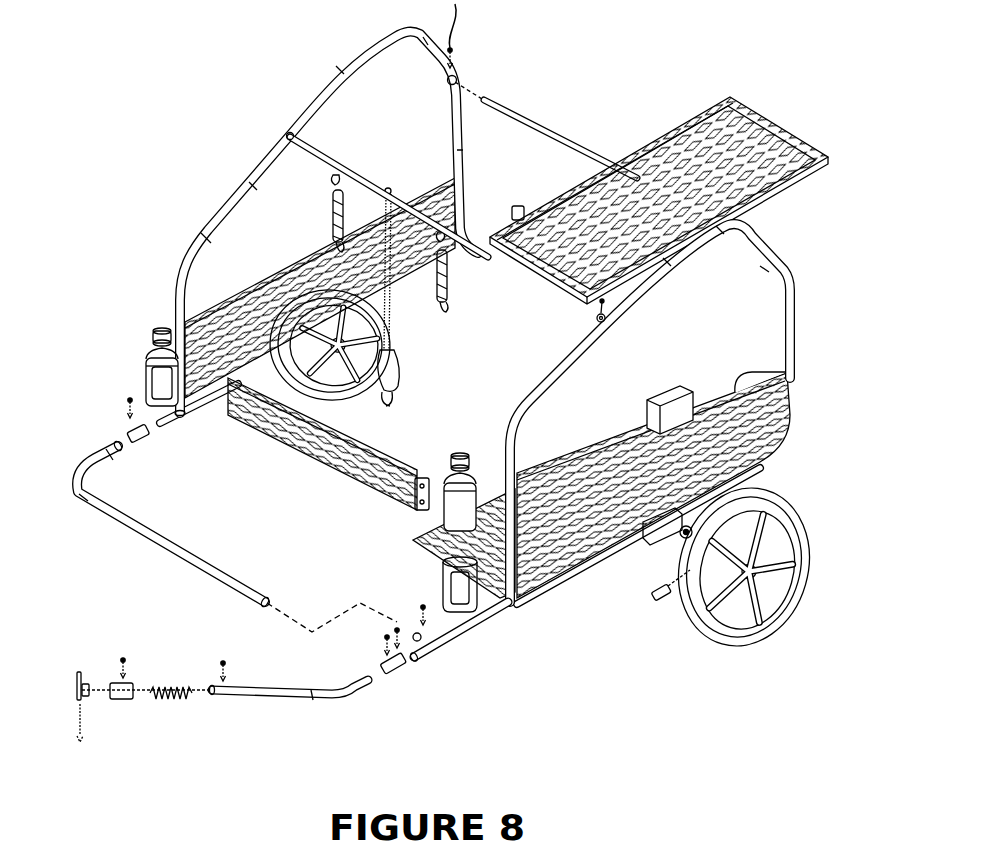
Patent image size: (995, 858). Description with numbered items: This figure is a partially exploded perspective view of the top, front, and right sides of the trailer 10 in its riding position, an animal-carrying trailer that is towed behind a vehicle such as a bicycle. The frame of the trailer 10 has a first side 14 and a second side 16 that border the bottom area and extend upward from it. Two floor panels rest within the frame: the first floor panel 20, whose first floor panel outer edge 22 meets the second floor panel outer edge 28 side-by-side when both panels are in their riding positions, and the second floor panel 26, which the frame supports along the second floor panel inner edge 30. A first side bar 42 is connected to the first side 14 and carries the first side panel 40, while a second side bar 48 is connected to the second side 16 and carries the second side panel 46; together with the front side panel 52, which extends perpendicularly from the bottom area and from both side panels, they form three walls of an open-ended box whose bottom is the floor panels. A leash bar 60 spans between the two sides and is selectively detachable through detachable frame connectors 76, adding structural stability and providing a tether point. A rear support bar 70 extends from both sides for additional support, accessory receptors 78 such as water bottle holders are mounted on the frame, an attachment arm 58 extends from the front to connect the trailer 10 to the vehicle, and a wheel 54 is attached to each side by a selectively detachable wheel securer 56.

The trailer 10 is at (184, 72).
The first side 14 is at (499, 608).
The second side 16 is at (208, 405).
The first floor panel 20 is at (672, 413).
The first floor panel outer edge 22 is at (628, 398).
The second floor panel 26 is at (737, 152).
The second floor panel outer edge 28 is at (773, 192).
The second floor panel inner edge 30 is at (643, 158).
The first side panel 40 is at (760, 428).
The first side bar 42 is at (776, 378).
The second side panel 46 is at (183, 316).
The second side bar 48 is at (266, 282).
The front side panel 52 is at (350, 461).
The wheel 54 is at (762, 622).
The wheel securer 56 is at (656, 604).
The attachment arm 58 is at (250, 700).
The leash bar 60 is at (370, 187).
The rear support bar 70 is at (530, 122).
The detachable frame connector 76 is at (290, 133).
The accessory receptor 78 is at (140, 372).